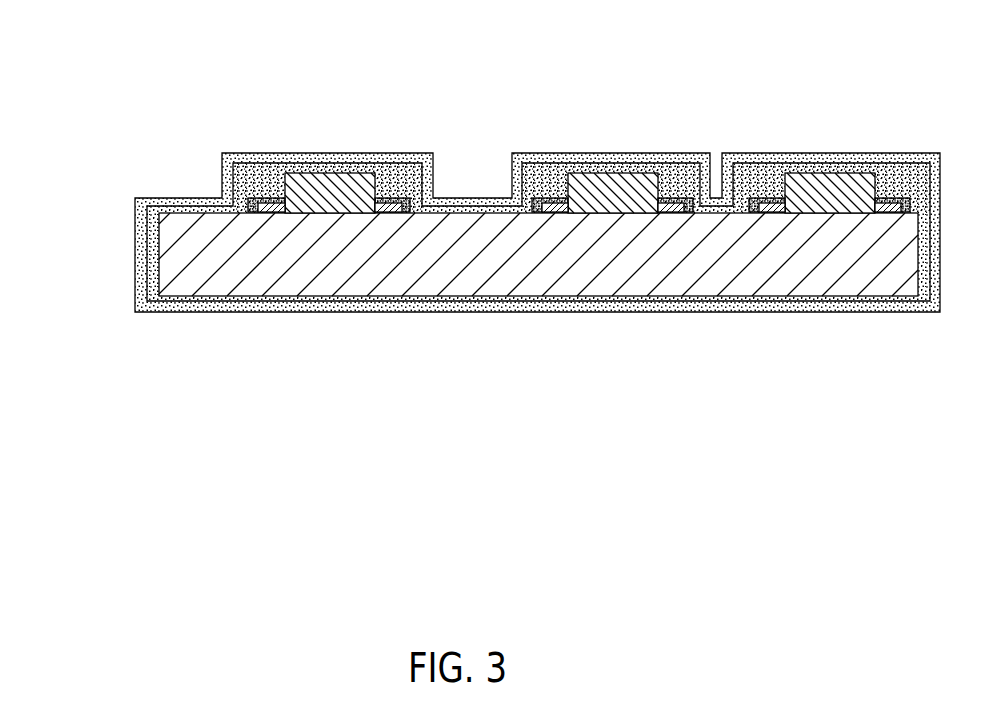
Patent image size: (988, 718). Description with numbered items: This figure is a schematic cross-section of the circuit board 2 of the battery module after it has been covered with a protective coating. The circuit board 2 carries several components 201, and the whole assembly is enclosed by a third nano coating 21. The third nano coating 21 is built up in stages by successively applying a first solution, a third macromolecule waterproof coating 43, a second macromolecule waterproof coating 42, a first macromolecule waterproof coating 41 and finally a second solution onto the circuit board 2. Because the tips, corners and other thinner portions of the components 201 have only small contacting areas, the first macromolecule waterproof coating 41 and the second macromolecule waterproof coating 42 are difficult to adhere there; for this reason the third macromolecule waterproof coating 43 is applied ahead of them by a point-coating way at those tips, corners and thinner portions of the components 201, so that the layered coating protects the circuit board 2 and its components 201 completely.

The circuit board 2 is at (240, 270).
The third nano coating 21 is at (483, 170).
The first macromolecule waterproof coating 41 is at (304, 158).
The second macromolecule waterproof coating 42 is at (258, 90).
The third macromolecule waterproof coating 43 is at (253, 204).
The components 201 is at (262, 203).